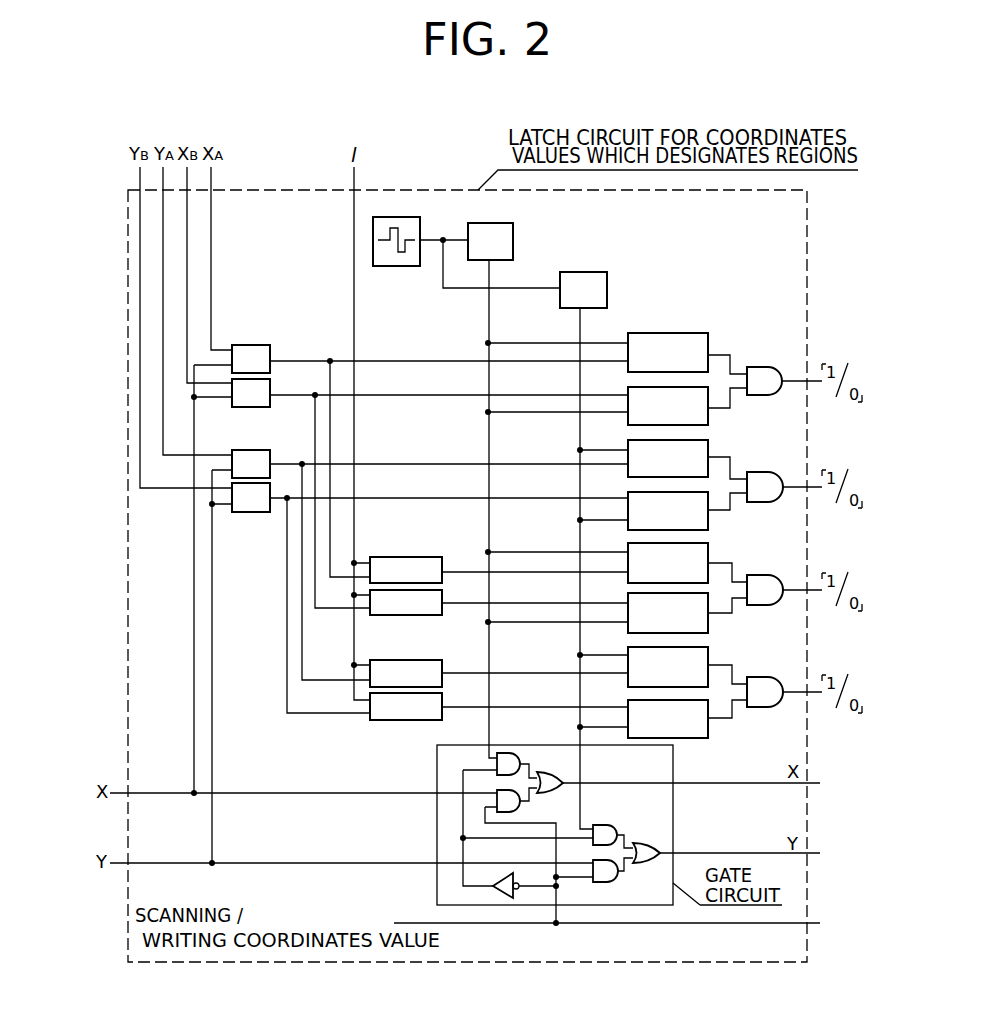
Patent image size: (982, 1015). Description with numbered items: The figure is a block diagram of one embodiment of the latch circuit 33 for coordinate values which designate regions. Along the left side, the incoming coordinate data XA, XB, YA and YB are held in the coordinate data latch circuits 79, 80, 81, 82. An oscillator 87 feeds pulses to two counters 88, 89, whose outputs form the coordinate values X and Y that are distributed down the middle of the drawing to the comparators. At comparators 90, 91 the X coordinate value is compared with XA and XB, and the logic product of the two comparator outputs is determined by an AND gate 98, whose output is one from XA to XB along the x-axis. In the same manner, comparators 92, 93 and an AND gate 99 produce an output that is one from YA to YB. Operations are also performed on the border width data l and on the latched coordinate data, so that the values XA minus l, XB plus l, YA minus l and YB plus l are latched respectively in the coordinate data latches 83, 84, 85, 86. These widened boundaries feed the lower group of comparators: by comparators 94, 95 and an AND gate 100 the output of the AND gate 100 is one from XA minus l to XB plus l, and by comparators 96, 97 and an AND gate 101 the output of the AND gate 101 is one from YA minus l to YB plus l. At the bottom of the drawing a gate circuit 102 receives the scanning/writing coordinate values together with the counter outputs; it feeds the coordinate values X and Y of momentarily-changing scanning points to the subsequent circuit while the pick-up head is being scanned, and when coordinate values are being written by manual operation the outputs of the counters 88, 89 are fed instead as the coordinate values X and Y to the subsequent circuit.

The latch circuit for coordinate values which designate regions 33 is at (430, 186).
The coordinate data latch circuit 79 is at (270, 345).
The coordinate data latch circuit 80 is at (266, 407).
The coordinate data latch circuit 81 is at (270, 452).
The coordinate data latch circuit 82 is at (260, 512).
The coordinate data latch 83 is at (440, 557).
The coordinate data latch 84 is at (437, 615).
The coordinate data latch 85 is at (442, 663).
The coordinate data latch 86 is at (440, 720).
The oscillator 87 is at (393, 266).
The counter 88 is at (513, 240).
The counter 89 is at (607, 284).
The comparator 90 is at (708, 340).
The comparator 91 is at (708, 418).
The comparator 92 is at (708, 448).
The comparator 93 is at (708, 522).
The comparator 94 is at (708, 553).
The comparator 95 is at (708, 626).
The comparator 96 is at (708, 656).
The comparator 97 is at (708, 730).
The AND gate 98 is at (770, 367).
The AND gate 99 is at (778, 465).
The AND gate 100 is at (778, 567).
The AND gate 101 is at (778, 669).
The gate circuit 102 is at (673, 790).